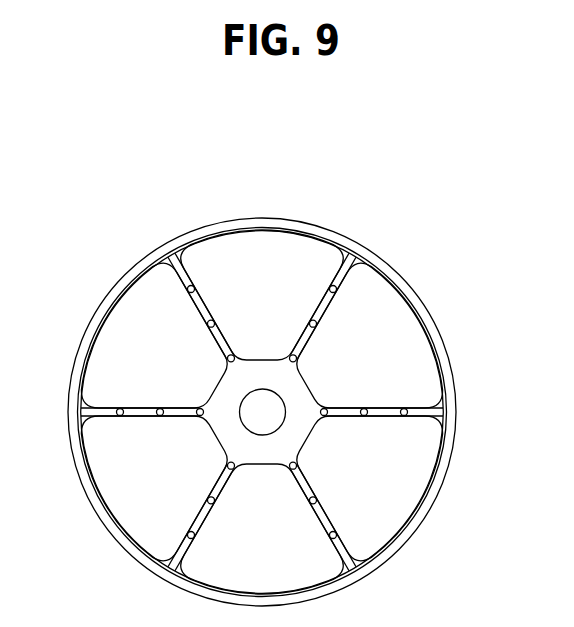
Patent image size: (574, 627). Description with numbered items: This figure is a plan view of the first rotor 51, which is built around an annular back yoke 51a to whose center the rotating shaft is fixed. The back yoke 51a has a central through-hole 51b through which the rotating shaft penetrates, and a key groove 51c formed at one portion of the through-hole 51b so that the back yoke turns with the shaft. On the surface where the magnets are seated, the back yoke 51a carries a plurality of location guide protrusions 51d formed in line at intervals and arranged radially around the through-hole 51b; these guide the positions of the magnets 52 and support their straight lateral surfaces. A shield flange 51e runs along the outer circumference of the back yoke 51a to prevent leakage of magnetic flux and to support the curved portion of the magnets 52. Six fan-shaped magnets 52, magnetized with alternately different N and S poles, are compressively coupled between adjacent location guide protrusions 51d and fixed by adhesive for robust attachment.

The first rotor 51 is at (447, 124).
The back yoke 51a is at (285, 191).
The central through-hole 51b is at (278, 430).
The key groove 51c is at (264, 389).
The location guide protrusions 51d is at (201, 410).
The shield flange 51e is at (118, 537).
The magnets 52 is at (224, 258).